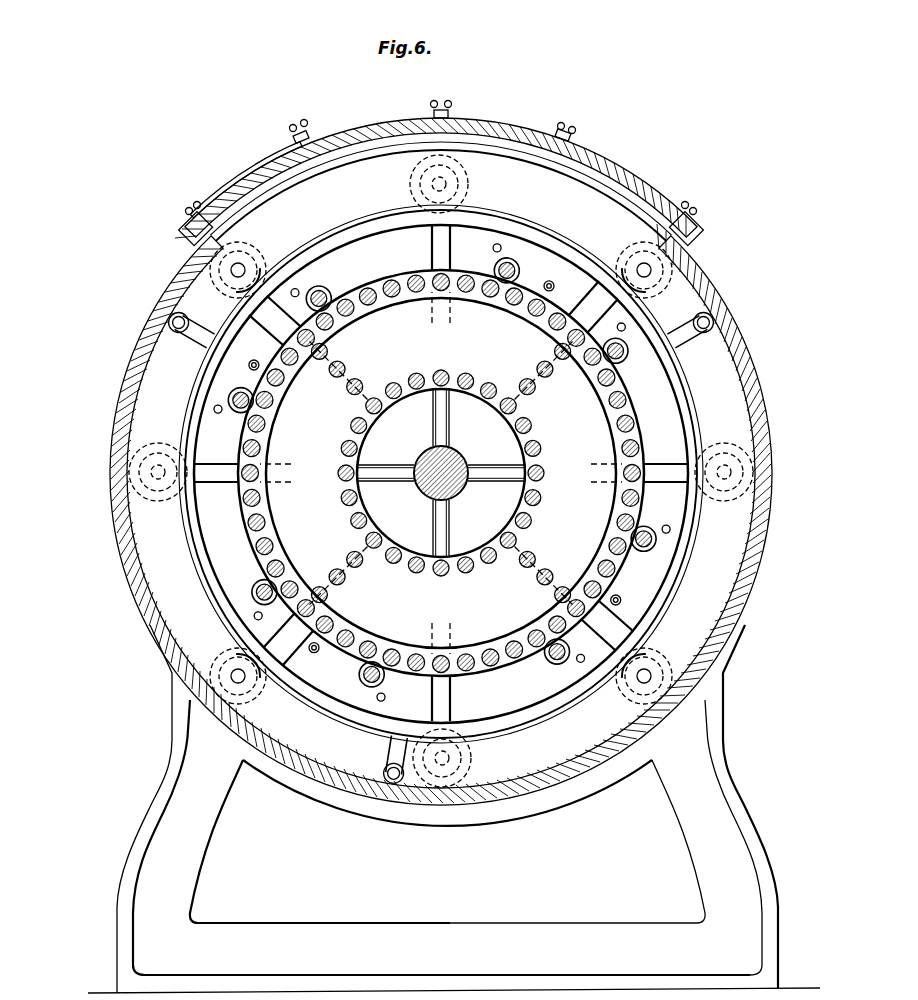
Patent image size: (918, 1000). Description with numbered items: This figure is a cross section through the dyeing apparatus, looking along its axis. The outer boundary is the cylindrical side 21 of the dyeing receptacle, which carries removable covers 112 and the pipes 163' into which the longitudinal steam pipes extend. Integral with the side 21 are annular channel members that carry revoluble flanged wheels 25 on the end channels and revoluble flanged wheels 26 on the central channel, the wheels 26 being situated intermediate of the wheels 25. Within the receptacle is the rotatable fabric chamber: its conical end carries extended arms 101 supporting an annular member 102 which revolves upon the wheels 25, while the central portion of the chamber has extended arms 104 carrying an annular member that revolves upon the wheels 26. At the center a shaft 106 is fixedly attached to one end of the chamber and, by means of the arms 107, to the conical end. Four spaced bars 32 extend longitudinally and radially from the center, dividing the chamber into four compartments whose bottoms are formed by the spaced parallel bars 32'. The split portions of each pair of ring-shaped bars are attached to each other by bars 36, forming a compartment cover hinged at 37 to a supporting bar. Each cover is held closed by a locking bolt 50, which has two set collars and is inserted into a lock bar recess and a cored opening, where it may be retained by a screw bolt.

The cylindrical side 21 is at (735, 330).
The revoluble flanged wheels 25 is at (452, 176).
The revoluble flanged wheels 26 is at (258, 258).
The spaced bars 32 is at (441, 482).
The spaced parallel bars 32' is at (442, 457).
The bars 36 is at (392, 270).
The hinge 37 is at (255, 360).
The locking bolt 50 is at (328, 290).
The extended arms 101 is at (650, 463).
The annular member 102 is at (687, 548).
The extended arms 104 is at (600, 630).
The shaft 106 is at (462, 458).
The arms 107 is at (418, 436).
The removable covers 112 is at (514, 128).
The pipes 163' is at (442, 548).